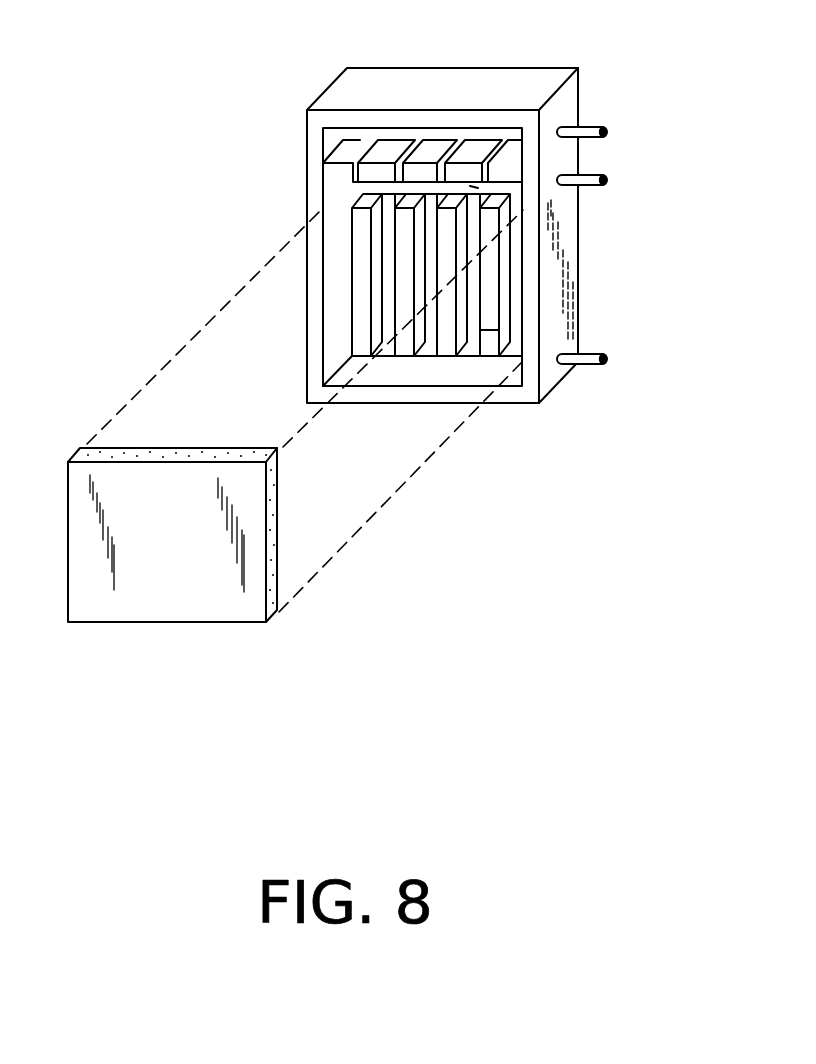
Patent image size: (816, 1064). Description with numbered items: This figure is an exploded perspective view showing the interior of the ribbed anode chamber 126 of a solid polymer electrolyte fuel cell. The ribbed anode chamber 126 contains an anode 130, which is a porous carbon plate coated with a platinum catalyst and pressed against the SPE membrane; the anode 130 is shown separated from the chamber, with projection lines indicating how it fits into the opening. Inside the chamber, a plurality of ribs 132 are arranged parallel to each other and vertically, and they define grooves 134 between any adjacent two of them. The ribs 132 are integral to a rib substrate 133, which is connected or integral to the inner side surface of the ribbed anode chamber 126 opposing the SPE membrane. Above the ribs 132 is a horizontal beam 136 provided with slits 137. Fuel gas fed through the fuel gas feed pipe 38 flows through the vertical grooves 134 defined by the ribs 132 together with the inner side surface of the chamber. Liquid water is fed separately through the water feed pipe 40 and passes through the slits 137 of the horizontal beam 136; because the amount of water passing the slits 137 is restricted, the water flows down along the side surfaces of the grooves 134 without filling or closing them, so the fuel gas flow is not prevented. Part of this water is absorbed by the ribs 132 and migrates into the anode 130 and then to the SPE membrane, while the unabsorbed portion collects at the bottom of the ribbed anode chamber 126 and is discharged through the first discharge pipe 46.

The ribbed anode chamber 126 is at (514, 78).
The anode 130 is at (210, 595).
The ribs 132 is at (358, 280).
The rib substrate 133 is at (473, 187).
The grooves 134 is at (472, 337).
The horizontal beam 136 is at (359, 148).
The slits 137 is at (356, 156).
The water feed pipe 40 is at (590, 127).
The fuel gas feed pipe 38 is at (592, 185).
The first discharge pipe 46 is at (598, 365).